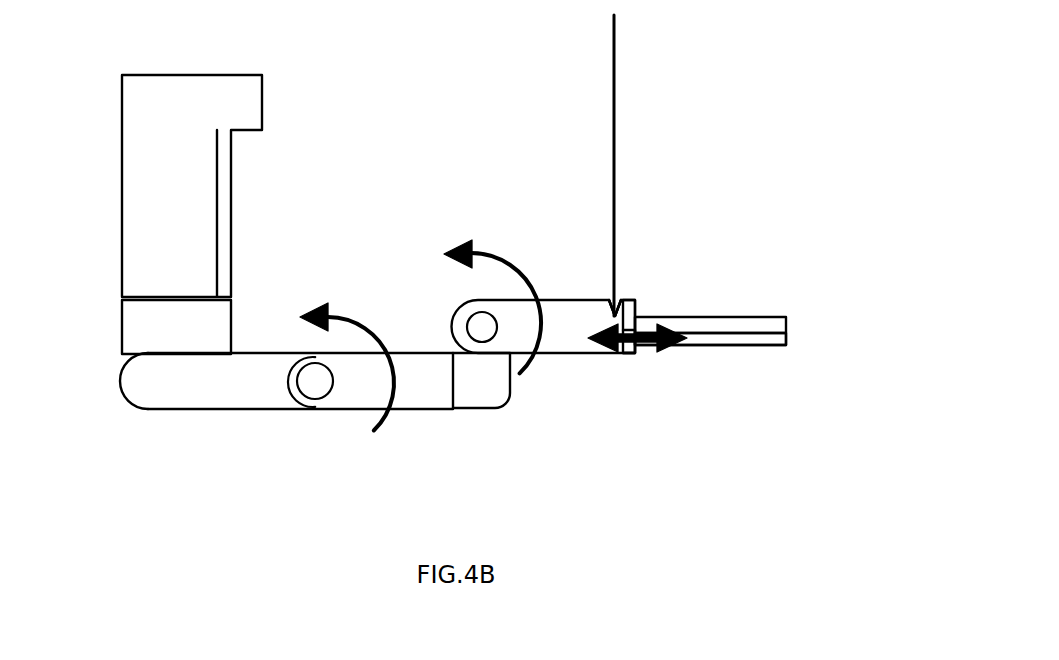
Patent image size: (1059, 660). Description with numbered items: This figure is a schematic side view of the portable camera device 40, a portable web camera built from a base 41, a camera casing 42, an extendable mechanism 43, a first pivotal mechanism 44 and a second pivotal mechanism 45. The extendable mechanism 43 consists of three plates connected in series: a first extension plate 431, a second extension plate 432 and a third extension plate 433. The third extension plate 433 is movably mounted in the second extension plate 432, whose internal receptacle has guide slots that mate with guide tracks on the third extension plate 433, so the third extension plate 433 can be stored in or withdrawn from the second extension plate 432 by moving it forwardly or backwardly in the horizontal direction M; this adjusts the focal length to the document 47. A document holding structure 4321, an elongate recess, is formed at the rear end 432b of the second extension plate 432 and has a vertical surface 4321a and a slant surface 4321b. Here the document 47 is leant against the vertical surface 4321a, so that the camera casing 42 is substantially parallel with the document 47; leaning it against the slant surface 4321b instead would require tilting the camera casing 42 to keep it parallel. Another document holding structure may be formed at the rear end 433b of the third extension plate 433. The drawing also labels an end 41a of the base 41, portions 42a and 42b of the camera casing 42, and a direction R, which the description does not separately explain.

The portable camera device 40 is at (743, 26).
The base 41 is at (263, 408).
The rounded end of base rail 41a is at (140, 393).
The camera casing 42 is at (193, 214).
The lower bracket portion 42a is at (213, 315).
The upper bracket portion 42b is at (232, 195).
The extendable mechanism 43 is at (579, 377).
The first extension plate 431 is at (468, 400).
The second extension plate 432 is at (572, 343).
The document holding structure 4321 is at (615, 286).
The vertical surface 4321a is at (617, 310).
The slant surface 4321b is at (648, 337).
The rear end of the second extension plate 432b is at (633, 303).
The third extension plate 433 is at (733, 325).
The rear end of the third extension plate 433b is at (787, 328).
The first pivotal mechanism 44 is at (290, 398).
The second pivotal mechanism 45 is at (480, 317).
The document 47 is at (615, 100).
The rotation direction R is at (500, 255).
The horizontal direction M is at (650, 346).